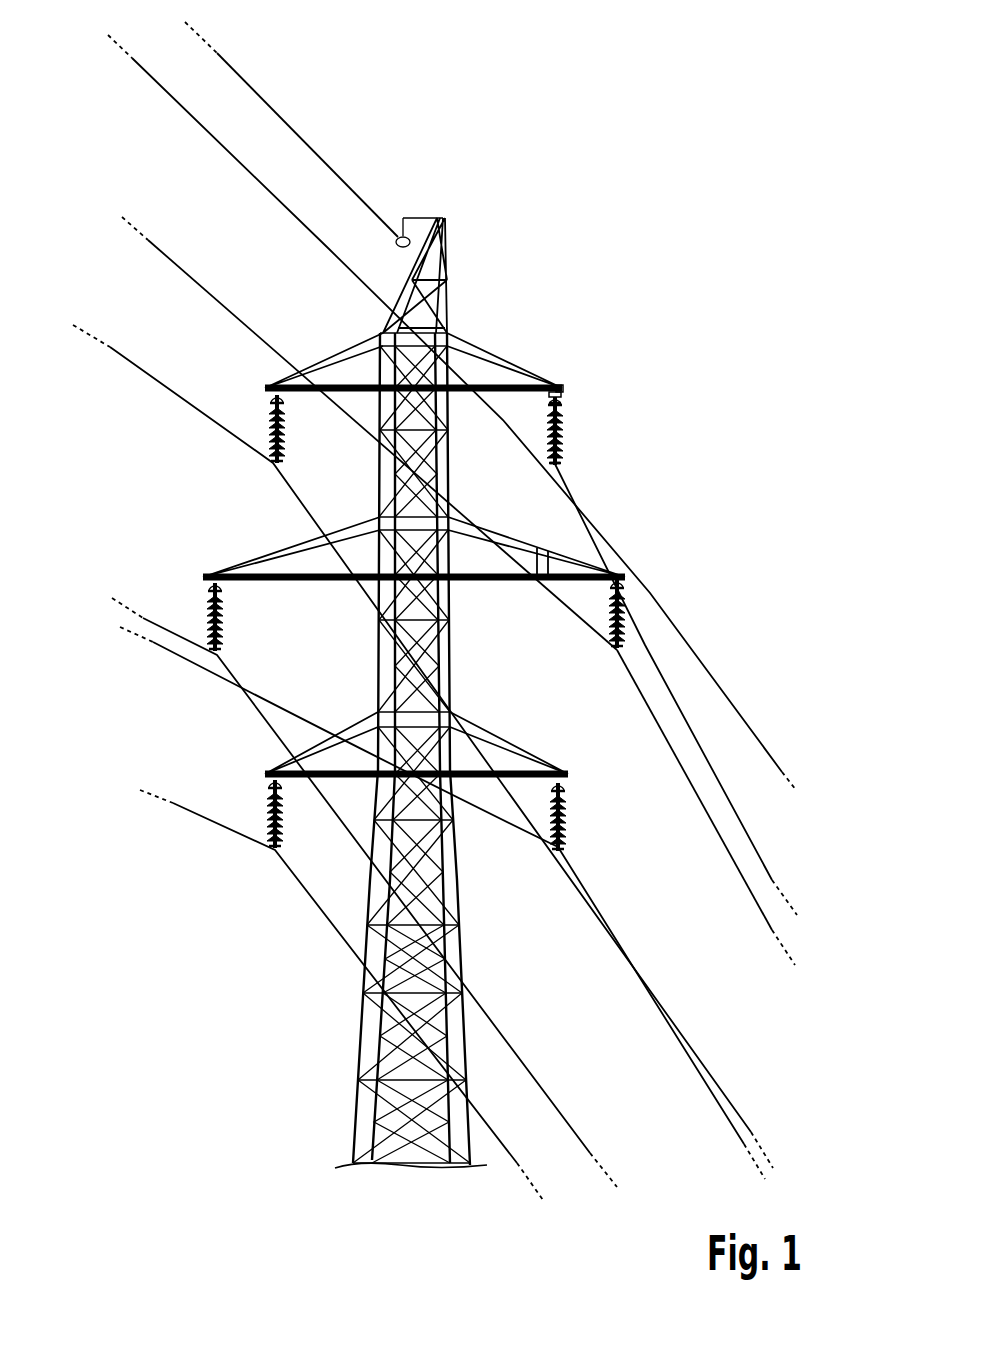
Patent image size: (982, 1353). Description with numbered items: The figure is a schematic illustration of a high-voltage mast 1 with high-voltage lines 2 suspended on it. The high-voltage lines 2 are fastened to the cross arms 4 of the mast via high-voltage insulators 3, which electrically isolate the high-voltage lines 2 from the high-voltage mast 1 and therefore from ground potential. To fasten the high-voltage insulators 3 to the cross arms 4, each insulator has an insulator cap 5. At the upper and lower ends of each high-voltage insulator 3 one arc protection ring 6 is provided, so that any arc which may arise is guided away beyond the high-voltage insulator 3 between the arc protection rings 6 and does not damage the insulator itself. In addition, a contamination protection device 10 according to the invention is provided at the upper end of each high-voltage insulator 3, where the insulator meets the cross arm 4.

The high-voltage mast 1 is at (485, 214).
The high-voltage lines 2 is at (723, 689).
The high-voltage insulators 3 is at (565, 432).
The cross arms 4 is at (508, 360).
The insulator caps 5 is at (564, 400).
The arc protection ring 6 is at (564, 405).
The contamination protection device 10 is at (574, 391).